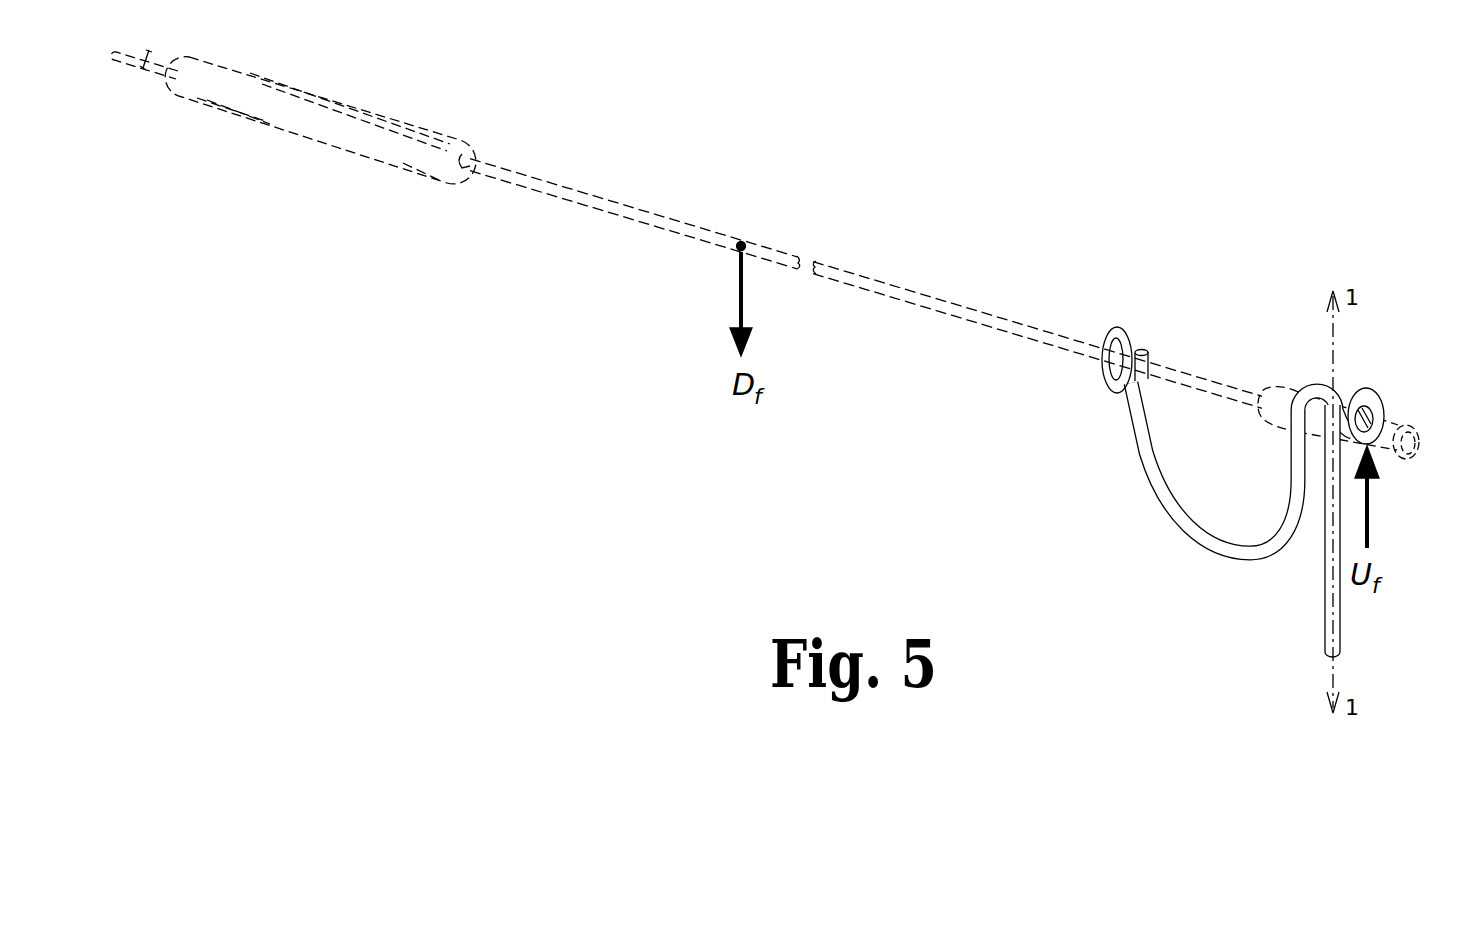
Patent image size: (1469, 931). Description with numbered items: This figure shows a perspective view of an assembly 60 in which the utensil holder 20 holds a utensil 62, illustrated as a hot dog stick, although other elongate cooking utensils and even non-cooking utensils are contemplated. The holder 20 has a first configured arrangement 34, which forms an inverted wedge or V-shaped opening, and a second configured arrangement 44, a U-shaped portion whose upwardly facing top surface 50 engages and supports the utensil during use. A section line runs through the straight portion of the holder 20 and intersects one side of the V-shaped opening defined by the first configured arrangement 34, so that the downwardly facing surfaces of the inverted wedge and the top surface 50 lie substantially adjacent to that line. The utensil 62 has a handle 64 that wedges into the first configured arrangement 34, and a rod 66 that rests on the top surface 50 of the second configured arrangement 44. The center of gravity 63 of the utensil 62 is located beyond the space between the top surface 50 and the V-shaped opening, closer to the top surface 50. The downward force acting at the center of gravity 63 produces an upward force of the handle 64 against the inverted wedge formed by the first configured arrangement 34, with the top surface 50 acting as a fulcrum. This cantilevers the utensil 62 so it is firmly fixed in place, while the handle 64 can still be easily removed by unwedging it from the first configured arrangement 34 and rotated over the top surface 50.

The assembly 60 is at (1106, 111).
The utensil 62 is at (693, 236).
The center of gravity 63 is at (741, 243).
The rod 66 is at (1215, 378).
The second configured arrangement 44 is at (1120, 323).
The top surface 50 is at (1103, 368).
The first configured arrangement 34 is at (1370, 378).
The handle 64 is at (1424, 445).
The utensil holder 20 is at (1326, 560).